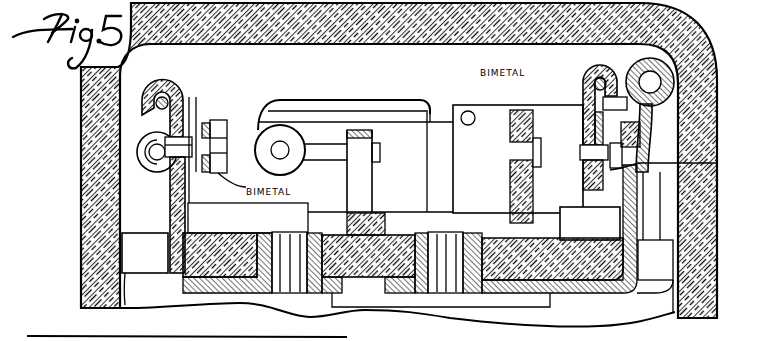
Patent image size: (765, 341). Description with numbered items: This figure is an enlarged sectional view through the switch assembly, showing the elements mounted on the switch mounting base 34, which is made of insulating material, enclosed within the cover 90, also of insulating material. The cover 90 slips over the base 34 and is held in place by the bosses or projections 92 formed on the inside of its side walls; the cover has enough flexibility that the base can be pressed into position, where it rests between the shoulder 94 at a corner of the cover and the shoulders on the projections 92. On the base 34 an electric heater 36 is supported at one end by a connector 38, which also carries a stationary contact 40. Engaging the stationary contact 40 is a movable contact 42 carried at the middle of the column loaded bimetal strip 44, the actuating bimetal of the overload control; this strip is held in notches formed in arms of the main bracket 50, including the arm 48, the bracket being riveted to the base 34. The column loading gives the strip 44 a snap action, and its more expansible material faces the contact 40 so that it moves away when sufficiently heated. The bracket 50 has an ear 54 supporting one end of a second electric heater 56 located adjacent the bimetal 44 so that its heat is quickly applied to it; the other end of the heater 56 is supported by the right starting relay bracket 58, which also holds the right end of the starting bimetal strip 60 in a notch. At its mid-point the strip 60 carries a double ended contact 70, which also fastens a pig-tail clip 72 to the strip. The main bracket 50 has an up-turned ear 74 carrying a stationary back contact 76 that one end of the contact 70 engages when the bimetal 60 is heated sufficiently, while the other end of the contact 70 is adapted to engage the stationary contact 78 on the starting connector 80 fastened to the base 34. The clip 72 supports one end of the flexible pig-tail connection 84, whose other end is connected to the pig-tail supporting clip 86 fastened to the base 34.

The switch mounting base 34 is at (366, 275).
The electric heater 36 is at (164, 174).
The connector 38 is at (178, 80).
The stationary contact 40 is at (193, 160).
The movable contact 42 is at (197, 104).
The column loaded bimetal strip 44 is at (213, 118).
The arm 48 is at (292, 90).
The main bracket 50 is at (372, 214).
The ear 54 is at (350, 179).
The electric heater 56 is at (436, 114).
The right starting relay bracket 58 is at (485, 110).
The starting bimetal strip 60 is at (602, 190).
The double ended contact 70 is at (582, 160).
The pig-tail clip 72 is at (590, 116).
The up-turned ear 74 is at (512, 190).
The stationary contact 76 is at (542, 164).
The stationary contact 78 is at (648, 166).
The starting connector 80 is at (616, 295).
The pig-tail connection 84 is at (642, 64).
The pig-tail supporting clip 86 is at (677, 164).
The cover 90 is at (94, 190).
The projections 92 is at (126, 287).
The shoulder 94 is at (356, 76).